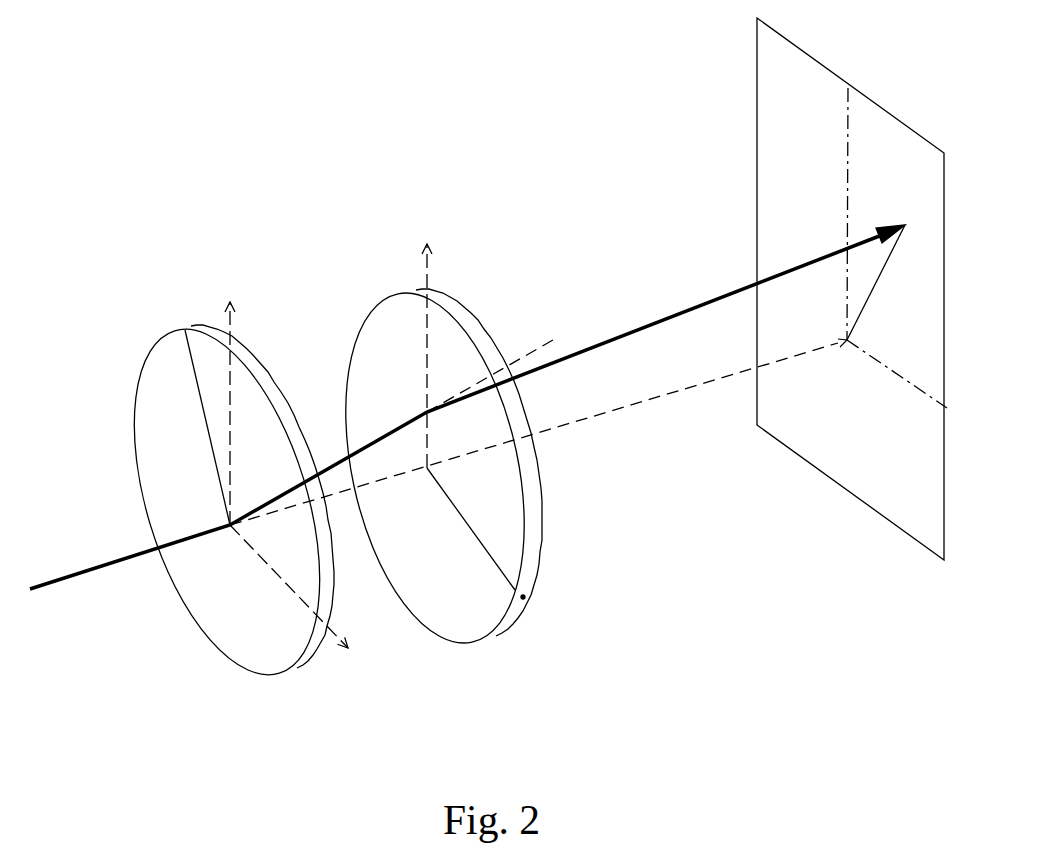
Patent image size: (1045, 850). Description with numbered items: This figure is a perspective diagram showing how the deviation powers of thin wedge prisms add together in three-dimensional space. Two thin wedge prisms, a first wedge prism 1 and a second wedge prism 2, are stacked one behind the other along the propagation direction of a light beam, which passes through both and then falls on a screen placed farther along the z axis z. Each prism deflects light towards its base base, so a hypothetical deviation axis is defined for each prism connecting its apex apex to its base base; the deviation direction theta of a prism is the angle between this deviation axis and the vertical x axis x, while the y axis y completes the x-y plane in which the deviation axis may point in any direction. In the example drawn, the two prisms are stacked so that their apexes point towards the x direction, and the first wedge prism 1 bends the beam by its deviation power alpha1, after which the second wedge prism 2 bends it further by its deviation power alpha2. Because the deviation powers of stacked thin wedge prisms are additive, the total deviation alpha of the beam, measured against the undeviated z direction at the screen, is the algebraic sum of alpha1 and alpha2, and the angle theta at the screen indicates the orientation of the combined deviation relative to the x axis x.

The first wedge prism 1 is at (230, 395).
The second wedge prism 2 is at (427, 418).
The light beam is at (646, 336).
The deviation power of the first wedge prism alpha1 is at (286, 493).
The deviation power of the second wedge prism alpha2 is at (562, 359).
The x axis x is at (323, 384).
The y axis y is at (297, 586).
The z axis z is at (852, 289).
The deviation direction theta is at (869, 295).
The base of the prism base is at (185, 320).
The apex of the prism apex is at (344, 365).